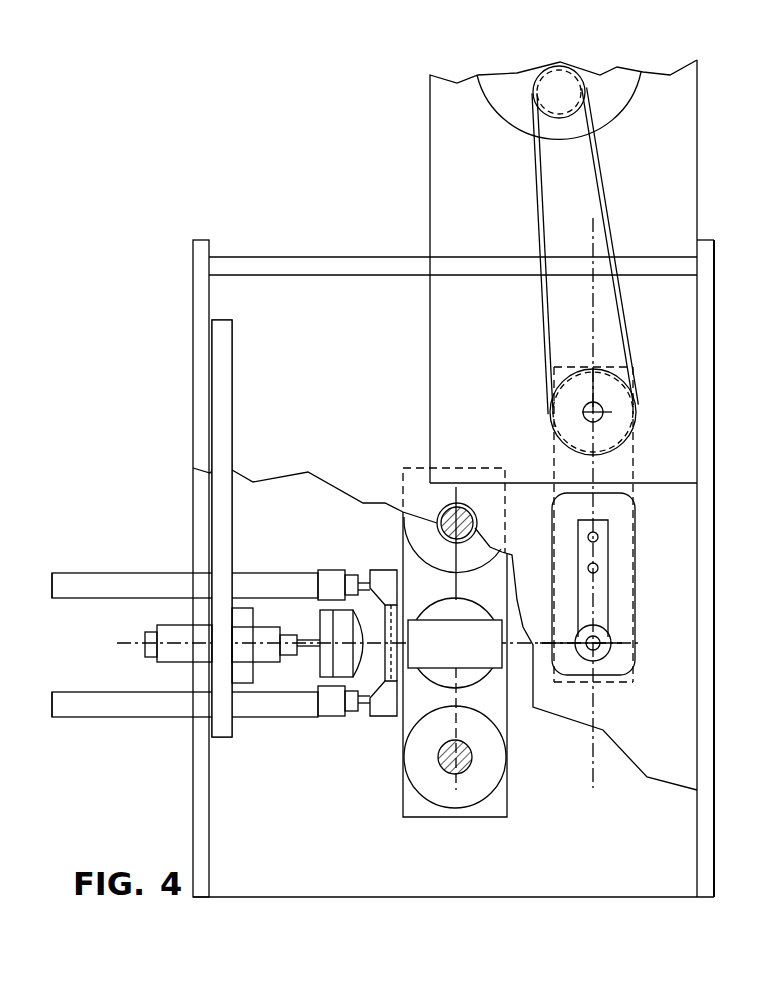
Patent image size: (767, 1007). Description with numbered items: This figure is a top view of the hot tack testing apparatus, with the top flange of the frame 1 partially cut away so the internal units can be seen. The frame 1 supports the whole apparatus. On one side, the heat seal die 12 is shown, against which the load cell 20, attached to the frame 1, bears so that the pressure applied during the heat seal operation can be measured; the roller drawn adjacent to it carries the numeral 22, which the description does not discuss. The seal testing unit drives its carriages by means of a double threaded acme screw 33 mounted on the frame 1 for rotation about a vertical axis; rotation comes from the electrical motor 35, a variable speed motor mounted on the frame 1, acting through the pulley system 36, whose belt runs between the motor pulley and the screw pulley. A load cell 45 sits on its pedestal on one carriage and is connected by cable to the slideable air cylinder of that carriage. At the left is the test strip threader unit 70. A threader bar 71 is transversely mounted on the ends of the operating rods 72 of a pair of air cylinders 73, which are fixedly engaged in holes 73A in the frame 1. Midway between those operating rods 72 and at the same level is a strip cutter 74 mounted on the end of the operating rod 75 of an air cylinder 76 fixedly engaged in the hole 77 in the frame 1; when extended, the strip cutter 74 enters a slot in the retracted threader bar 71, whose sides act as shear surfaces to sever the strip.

The frame 1 is at (430, 186).
The heat seal die 12 is at (507, 800).
The load cell 20 is at (402, 522).
The guide roller 22 is at (492, 665).
The double threaded acme screw 33 is at (550, 410).
The electrical motor 35 is at (533, 90).
The pulley system 36 is at (543, 318).
The load cell 45 is at (600, 648).
The test strip threader unit 70 is at (232, 563).
The threader bar 71 is at (397, 675).
The operating rods 72 is at (366, 570).
The air cylinders 73 is at (267, 578).
The holes 73A is at (210, 573).
The strip cutter 74 is at (320, 618).
The operating rod 75 is at (308, 648).
The air cylinder 76 is at (170, 662).
The hole 77 is at (192, 623).